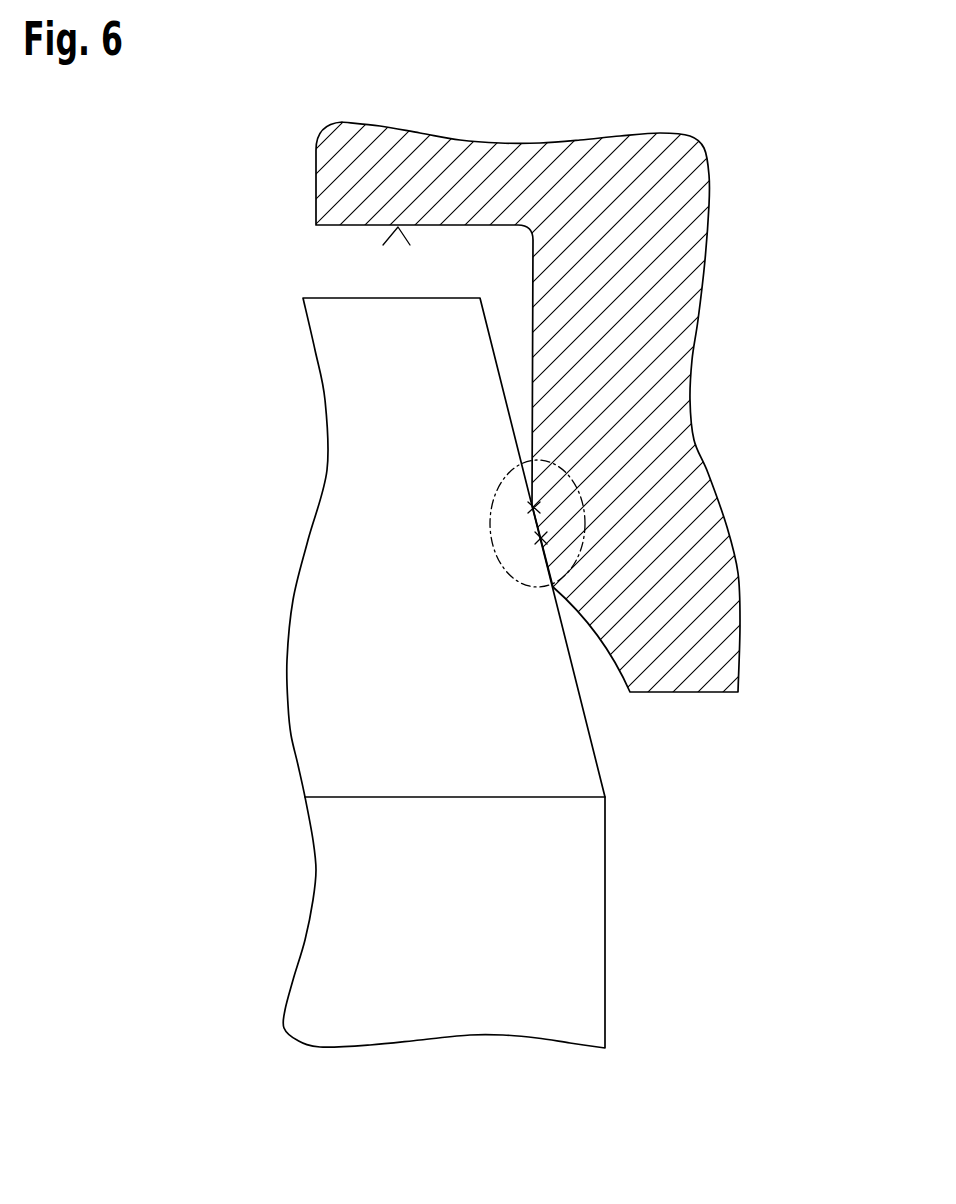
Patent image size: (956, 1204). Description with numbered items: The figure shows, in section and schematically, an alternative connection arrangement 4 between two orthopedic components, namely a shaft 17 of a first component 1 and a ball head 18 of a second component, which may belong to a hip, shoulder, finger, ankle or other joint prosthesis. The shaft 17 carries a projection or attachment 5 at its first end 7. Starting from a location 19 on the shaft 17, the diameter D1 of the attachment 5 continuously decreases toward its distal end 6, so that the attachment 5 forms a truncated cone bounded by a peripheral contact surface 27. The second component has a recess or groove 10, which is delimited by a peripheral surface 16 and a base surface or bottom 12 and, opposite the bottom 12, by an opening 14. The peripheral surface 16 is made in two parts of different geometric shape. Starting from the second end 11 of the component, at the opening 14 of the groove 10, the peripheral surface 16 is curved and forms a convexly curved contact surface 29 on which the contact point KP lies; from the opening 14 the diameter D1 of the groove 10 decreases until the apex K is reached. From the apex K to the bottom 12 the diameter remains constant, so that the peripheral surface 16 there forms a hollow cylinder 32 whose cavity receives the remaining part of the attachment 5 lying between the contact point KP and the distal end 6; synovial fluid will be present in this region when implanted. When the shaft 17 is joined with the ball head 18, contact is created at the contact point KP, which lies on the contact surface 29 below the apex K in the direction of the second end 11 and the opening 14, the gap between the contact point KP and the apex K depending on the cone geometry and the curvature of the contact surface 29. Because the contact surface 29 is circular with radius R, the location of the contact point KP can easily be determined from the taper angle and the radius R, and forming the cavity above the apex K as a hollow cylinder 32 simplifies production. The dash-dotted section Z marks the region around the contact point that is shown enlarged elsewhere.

The first component 1 is at (675, 965).
The connection arrangement 4 is at (780, 343).
The attachment 5 is at (414, 464).
The distal end 6 is at (357, 290).
The first end 7 is at (575, 208).
The groove 10 is at (450, 268).
The second end 11 is at (722, 697).
The bottom 12 is at (383, 245).
The opening 14 is at (617, 713).
The peripheral surface 16 is at (533, 340).
The shaft 17 is at (650, 880).
The ball head 18 is at (728, 140).
The location 19 is at (605, 797).
The contact surface 27 is at (491, 339).
The contact surface 29 is at (599, 675).
The hollow cylinder 32 is at (521, 270).
The radius R is at (592, 643).
The apex K is at (530, 508).
The contact point KP is at (538, 538).
The section Z is at (512, 584).
The diameter D1 is at (580, 704).